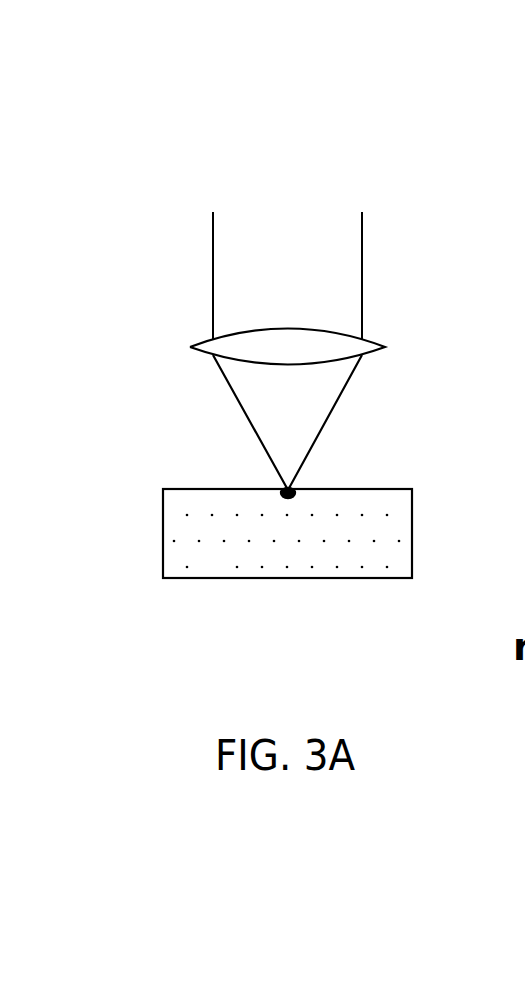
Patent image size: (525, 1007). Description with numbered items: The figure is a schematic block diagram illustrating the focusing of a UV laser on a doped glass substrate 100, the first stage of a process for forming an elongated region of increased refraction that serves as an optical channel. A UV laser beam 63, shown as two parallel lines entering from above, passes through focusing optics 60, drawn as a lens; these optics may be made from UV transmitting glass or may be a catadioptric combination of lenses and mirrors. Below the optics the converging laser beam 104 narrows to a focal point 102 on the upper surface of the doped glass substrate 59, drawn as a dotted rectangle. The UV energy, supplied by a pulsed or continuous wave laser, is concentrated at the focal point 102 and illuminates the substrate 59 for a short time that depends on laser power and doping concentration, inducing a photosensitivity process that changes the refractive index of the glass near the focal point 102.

The focusing of a UV laser on a doped glass substrate 100 is at (408, 181).
The UV laser beam 63 is at (318, 283).
The focusing optics 60 is at (357, 357).
The laser beam 104 is at (302, 408).
The focal point 102 is at (300, 480).
The doped glass substrate 59 is at (202, 558).